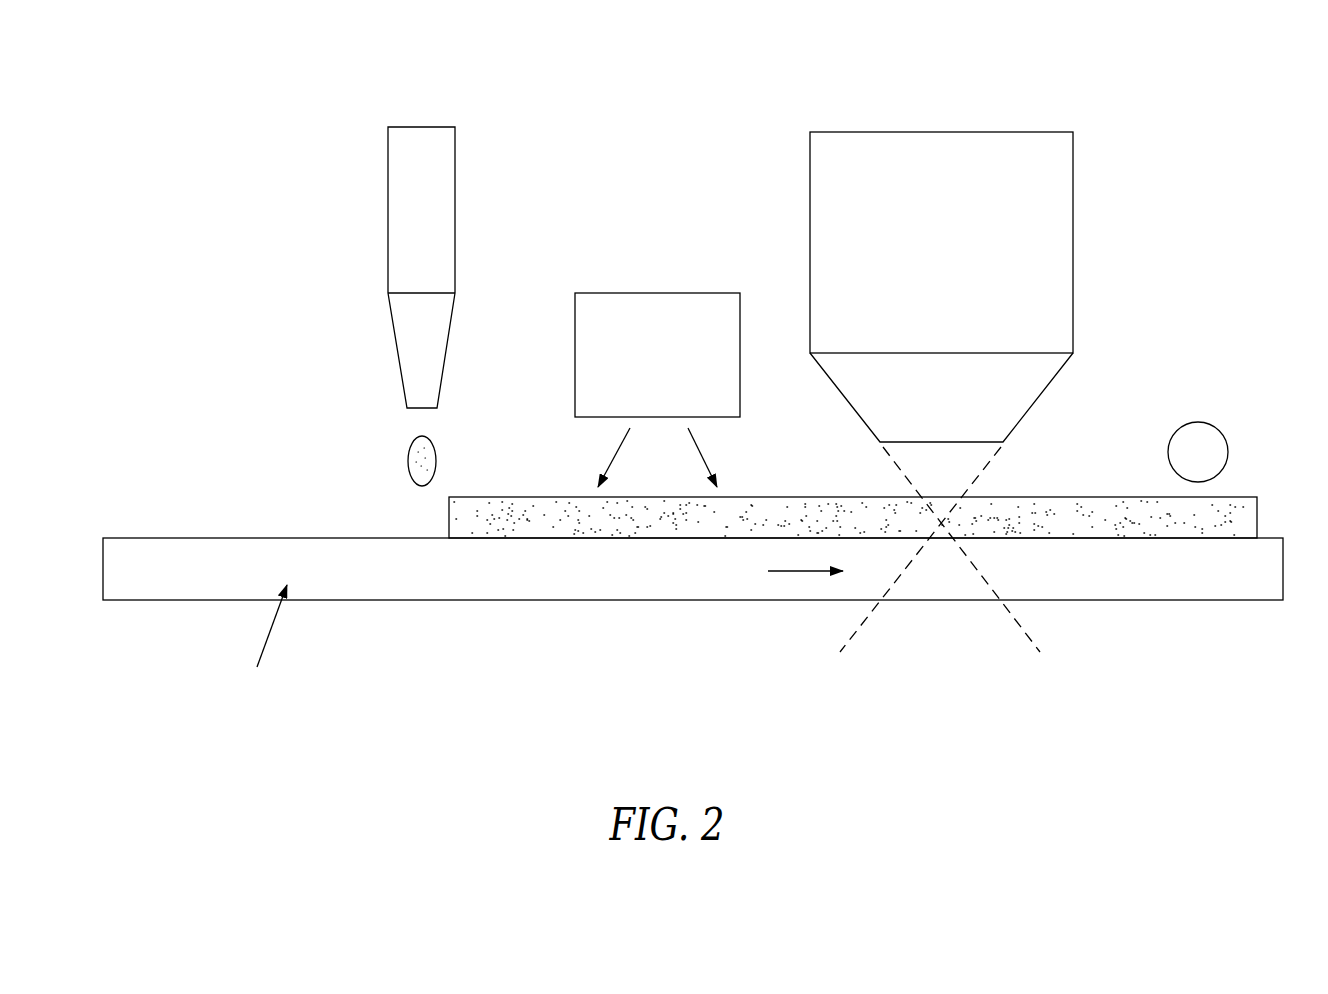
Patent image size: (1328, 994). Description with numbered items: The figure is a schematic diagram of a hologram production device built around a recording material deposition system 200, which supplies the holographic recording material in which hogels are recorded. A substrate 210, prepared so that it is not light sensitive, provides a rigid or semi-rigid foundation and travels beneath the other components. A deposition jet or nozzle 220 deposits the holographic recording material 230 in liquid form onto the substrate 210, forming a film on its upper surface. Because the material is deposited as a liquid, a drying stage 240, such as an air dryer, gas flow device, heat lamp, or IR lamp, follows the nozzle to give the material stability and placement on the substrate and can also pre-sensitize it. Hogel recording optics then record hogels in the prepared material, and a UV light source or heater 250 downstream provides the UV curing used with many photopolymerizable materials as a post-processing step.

The recording material deposition system 200 is at (448, 738).
The substrate 210 is at (153, 578).
The deposition jet or nozzle 220 is at (405, 192).
The holographic recording material 230 is at (448, 517).
The drying stage 240 is at (643, 362).
The UV light source or heater 250 is at (1228, 451).